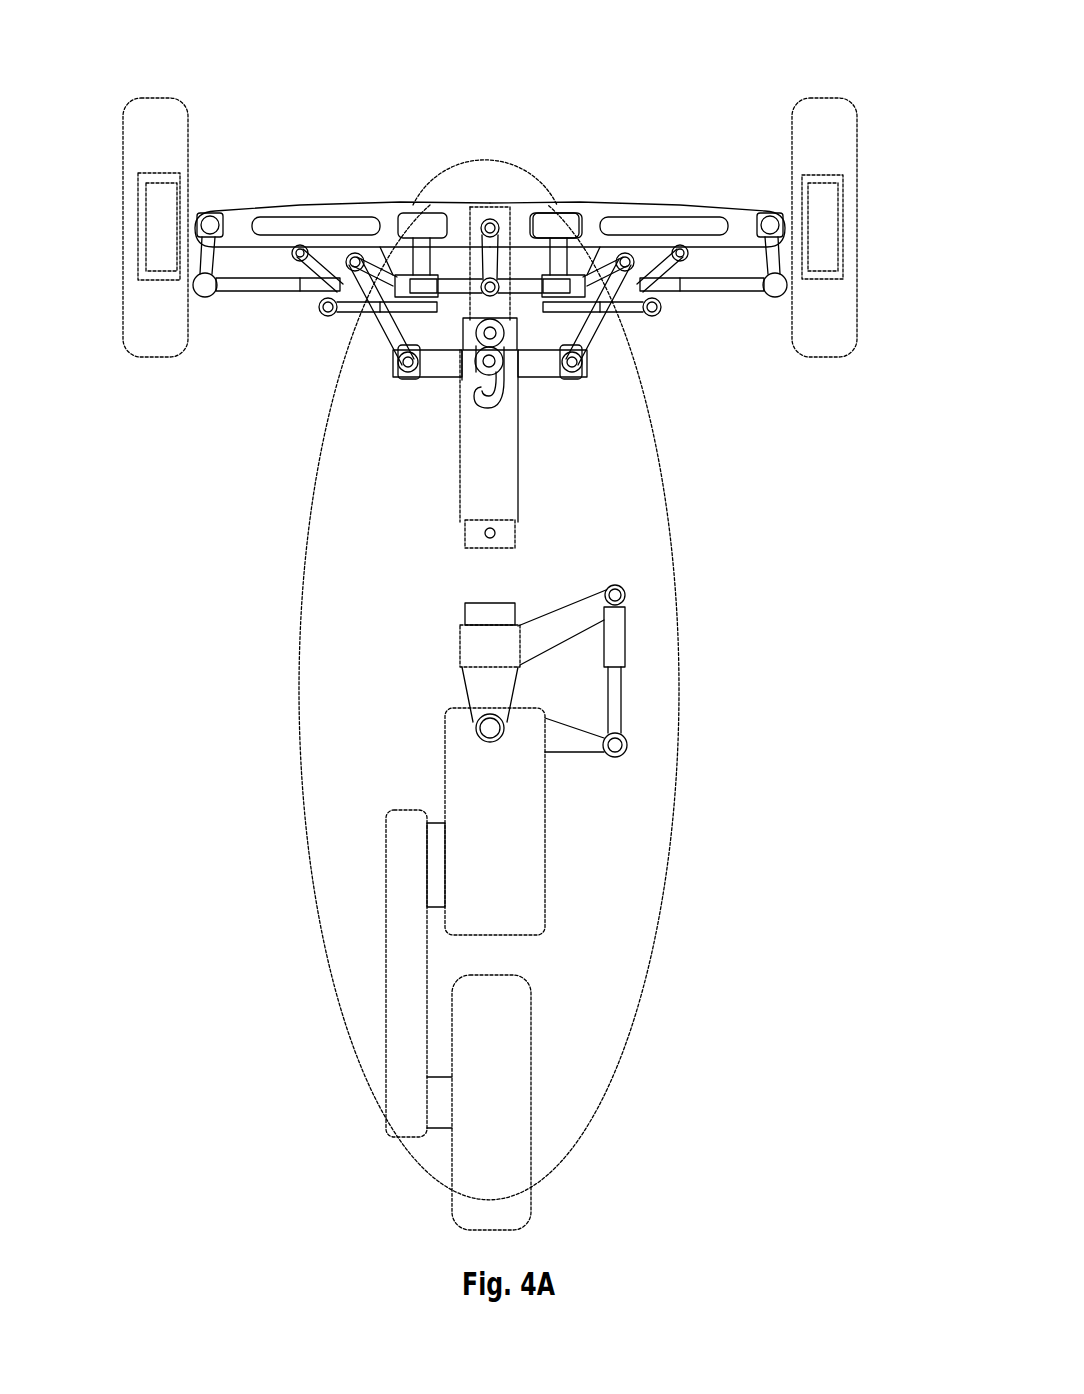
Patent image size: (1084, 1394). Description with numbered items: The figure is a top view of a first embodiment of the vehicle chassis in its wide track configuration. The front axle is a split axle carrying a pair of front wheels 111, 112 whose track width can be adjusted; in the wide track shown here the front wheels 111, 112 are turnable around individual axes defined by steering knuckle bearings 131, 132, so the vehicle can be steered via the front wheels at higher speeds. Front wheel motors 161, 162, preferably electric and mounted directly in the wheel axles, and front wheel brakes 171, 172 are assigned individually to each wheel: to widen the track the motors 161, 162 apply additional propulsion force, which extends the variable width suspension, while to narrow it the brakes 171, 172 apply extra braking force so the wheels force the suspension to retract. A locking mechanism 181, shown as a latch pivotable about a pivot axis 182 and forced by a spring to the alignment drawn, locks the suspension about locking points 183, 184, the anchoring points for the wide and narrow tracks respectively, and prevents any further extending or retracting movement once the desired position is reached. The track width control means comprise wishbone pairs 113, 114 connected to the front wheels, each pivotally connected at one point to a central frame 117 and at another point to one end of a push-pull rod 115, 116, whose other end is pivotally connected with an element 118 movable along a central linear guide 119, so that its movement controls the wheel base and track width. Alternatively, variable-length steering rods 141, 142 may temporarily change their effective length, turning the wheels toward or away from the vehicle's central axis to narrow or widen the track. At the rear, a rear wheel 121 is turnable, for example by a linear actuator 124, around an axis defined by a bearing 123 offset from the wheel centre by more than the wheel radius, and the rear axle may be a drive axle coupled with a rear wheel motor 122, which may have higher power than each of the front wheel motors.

The front wheel 111 is at (116, 227).
The front wheel 112 is at (876, 227).
The wishbone pair 113 is at (267, 167).
The wishbone pair 114 is at (725, 150).
The push-pull rod 115 is at (353, 328).
The push-pull rod 116 is at (718, 350).
The central frame 117 is at (720, 156).
The element movable along a linear guide 118 is at (717, 376).
The central linear guide 119 is at (726, 241).
The rear wheel 121 is at (706, 1028).
The rear wheel motor 122 is at (702, 803).
The bearing 123 is at (710, 641).
The linear actuator 124 is at (739, 624).
The steering knuckle bearing 131 is at (134, 219).
The steering knuckle bearing 132 is at (858, 205).
The variable-length steering rod 141 is at (194, 269).
The variable-length steering rod 142 is at (798, 271).
The front wheel motor 161 is at (111, 227).
The front wheel motor 162 is at (881, 188).
The front wheel brake 171 is at (112, 203).
The front wheel brake 172 is at (884, 227).
The locking mechanism 181 is at (267, 414).
The pivot axis 182 is at (264, 394).
The locking point 183 is at (717, 397).
The locking point 184 is at (280, 579).